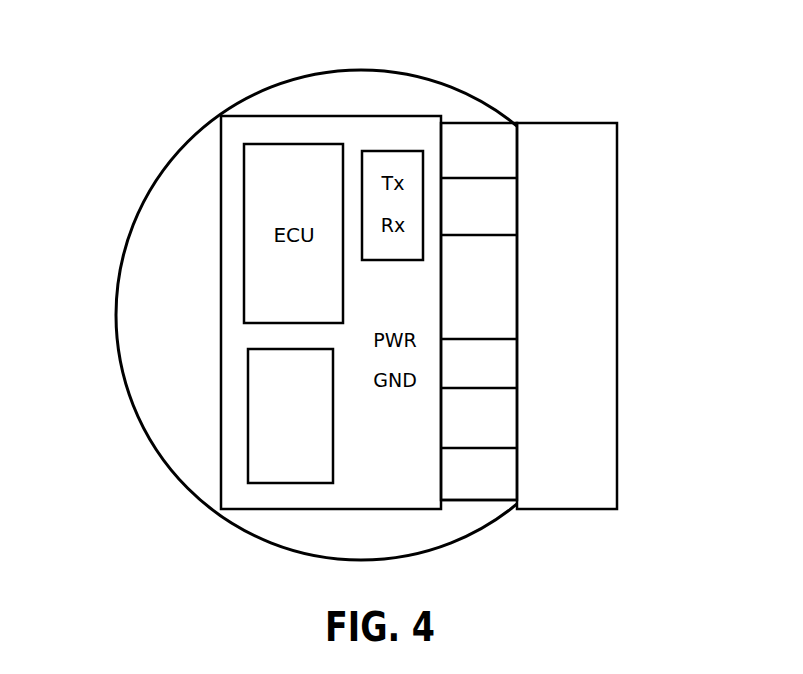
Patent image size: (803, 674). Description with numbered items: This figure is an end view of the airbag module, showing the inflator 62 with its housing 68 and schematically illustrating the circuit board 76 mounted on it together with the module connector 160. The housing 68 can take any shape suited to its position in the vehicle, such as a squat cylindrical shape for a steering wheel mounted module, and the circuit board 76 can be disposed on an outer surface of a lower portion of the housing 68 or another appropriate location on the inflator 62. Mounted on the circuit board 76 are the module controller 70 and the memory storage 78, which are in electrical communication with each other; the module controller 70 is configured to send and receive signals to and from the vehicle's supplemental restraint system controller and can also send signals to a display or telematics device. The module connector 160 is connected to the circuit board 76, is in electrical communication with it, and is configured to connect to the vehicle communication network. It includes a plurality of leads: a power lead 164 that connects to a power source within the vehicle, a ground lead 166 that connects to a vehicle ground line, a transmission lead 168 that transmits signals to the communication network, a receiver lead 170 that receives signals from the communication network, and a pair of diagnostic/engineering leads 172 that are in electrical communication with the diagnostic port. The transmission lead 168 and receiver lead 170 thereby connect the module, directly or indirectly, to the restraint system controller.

The inflator 62 is at (158, 505).
The housing 68 is at (115, 290).
The module controller 70 is at (257, 143).
The circuit board 76 is at (428, 509).
The memory storage 78 is at (248, 483).
The module connector 160 is at (617, 308).
The power lead 164 is at (473, 339).
The ground lead 166 is at (473, 388).
The transmission lead 168 is at (473, 178).
The receiver lead 170 is at (473, 235).
The diagnostic/engineering leads 172 is at (473, 448).